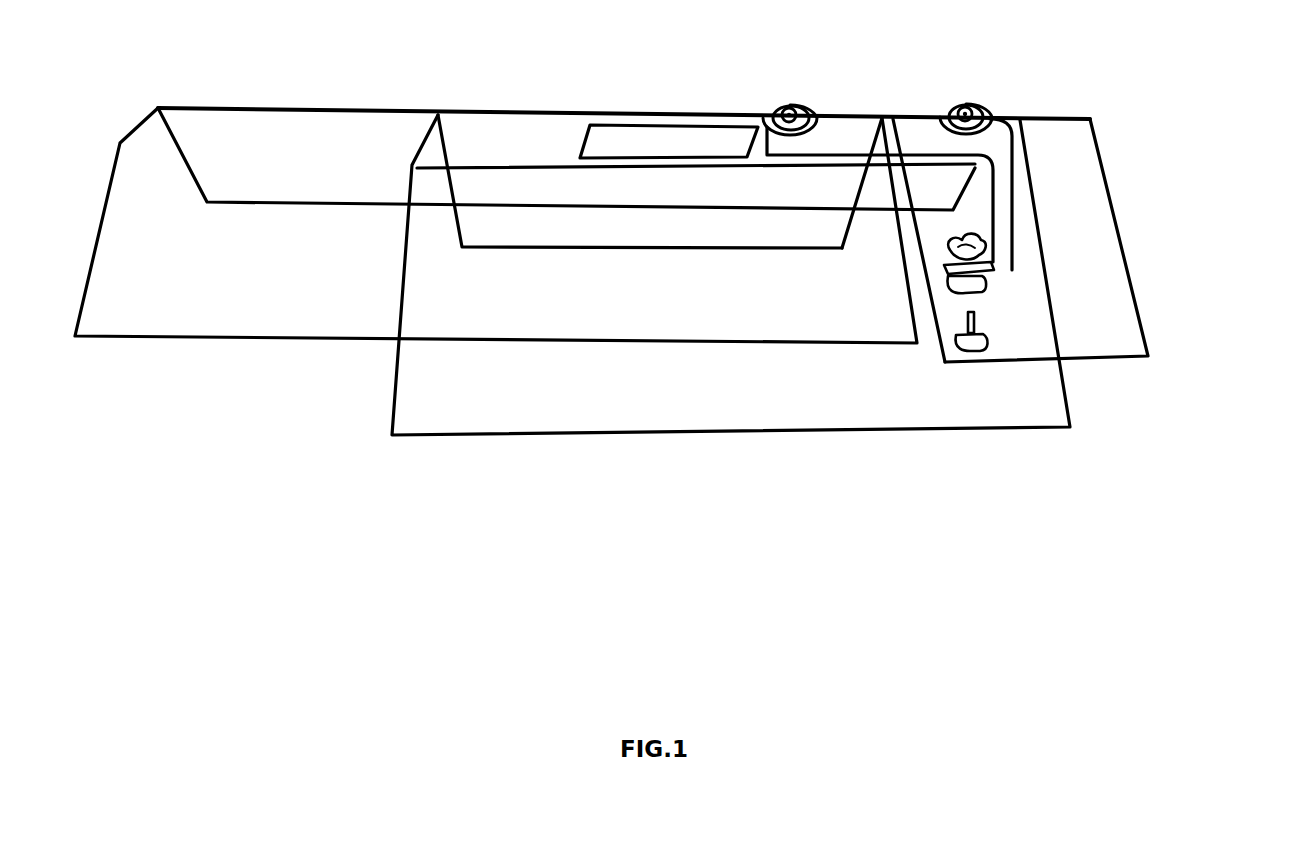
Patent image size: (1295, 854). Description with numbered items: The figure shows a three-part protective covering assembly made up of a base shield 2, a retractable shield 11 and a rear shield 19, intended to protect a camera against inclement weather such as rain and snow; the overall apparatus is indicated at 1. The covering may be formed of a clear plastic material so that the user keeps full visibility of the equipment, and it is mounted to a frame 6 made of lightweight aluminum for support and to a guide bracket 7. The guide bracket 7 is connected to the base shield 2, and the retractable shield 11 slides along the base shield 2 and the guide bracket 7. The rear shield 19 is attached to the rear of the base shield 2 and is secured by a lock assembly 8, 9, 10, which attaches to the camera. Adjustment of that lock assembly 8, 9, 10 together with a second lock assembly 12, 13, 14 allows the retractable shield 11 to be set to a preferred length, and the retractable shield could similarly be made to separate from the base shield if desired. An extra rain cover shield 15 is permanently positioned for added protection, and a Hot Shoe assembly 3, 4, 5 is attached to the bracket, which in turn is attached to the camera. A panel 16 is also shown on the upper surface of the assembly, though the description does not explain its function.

The food processing apparatus 1 is at (1216, 50).
The base shield 2 is at (1003, 395).
The Hot Shoe assembly 3 is at (983, 333).
The Hot Shoe assembly 4 is at (973, 285).
The Hot Shoe assembly 5 is at (973, 260).
The frame 6 is at (997, 222).
The guide bracket 7 is at (858, 141).
The lock assembly 8 is at (990, 106).
The lock assembly 9 is at (968, 110).
The lock assembly 10 is at (960, 108).
The retractable shield 11 is at (216, 132).
The lock assembly 12 is at (811, 104).
The lock assembly 13 is at (790, 112).
The lock assembly 14 is at (775, 110).
The extra rain cover shield 15 is at (508, 138).
The display 16 is at (657, 140).
The rear shield 19 is at (1092, 188).